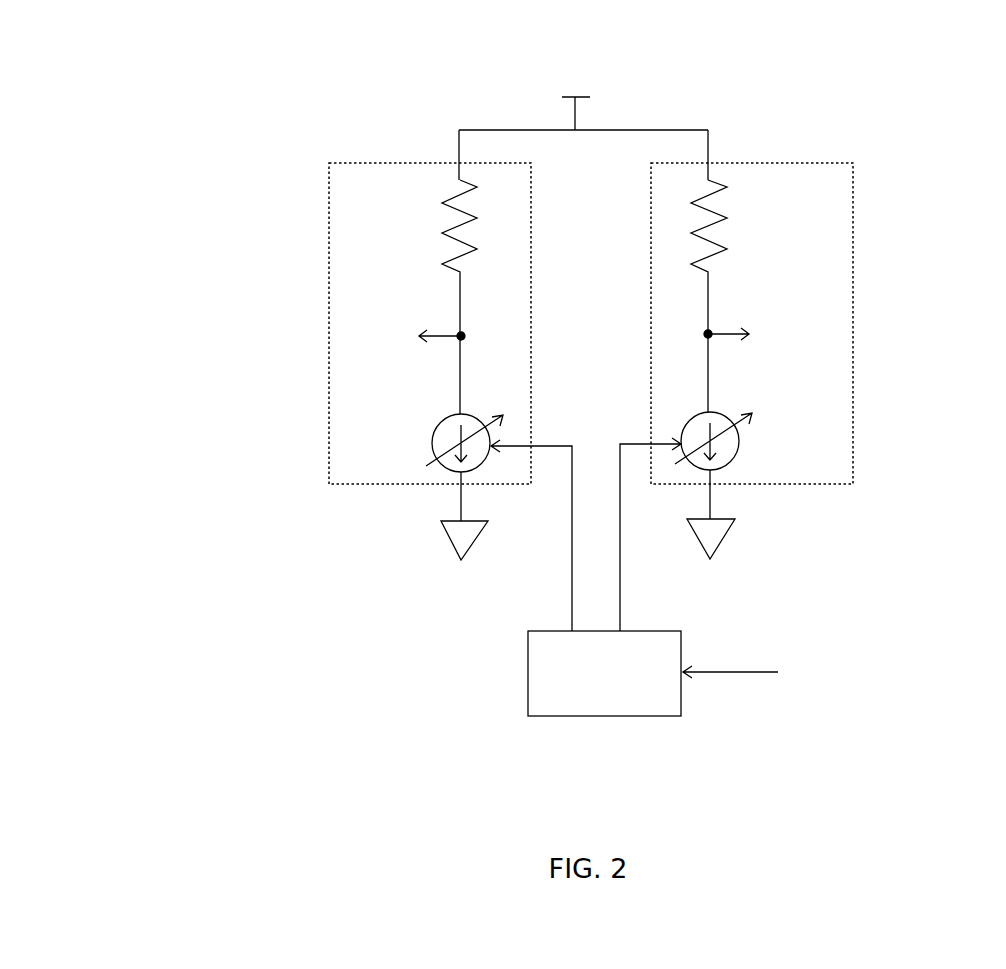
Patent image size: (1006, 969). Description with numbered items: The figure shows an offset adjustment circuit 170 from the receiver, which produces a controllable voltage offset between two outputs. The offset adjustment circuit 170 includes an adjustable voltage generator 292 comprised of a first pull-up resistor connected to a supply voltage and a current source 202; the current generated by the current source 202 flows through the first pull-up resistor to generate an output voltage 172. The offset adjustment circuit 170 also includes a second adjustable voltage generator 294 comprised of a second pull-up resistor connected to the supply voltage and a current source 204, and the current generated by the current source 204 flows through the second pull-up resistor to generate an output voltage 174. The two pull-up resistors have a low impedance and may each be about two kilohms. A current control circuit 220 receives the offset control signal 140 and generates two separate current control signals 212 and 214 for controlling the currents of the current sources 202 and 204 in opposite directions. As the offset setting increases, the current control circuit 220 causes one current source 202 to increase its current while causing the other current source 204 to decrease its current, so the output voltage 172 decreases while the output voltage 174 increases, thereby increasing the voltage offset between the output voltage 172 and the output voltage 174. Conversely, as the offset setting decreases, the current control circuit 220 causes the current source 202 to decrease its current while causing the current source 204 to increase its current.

The offset adjustment circuit 170 is at (237, 83).
The adjustable voltage generator 292 is at (317, 246).
The second adjustable voltage generator 294 is at (867, 251).
The output voltage 172 is at (433, 352).
The output voltage 174 is at (748, 347).
The current source 202 is at (422, 435).
The current source 204 is at (750, 445).
The current control signal 212 is at (562, 583).
The current control signal 214 is at (627, 583).
The current control circuit 220 is at (604, 673).
The offset control signal 140 is at (768, 676).